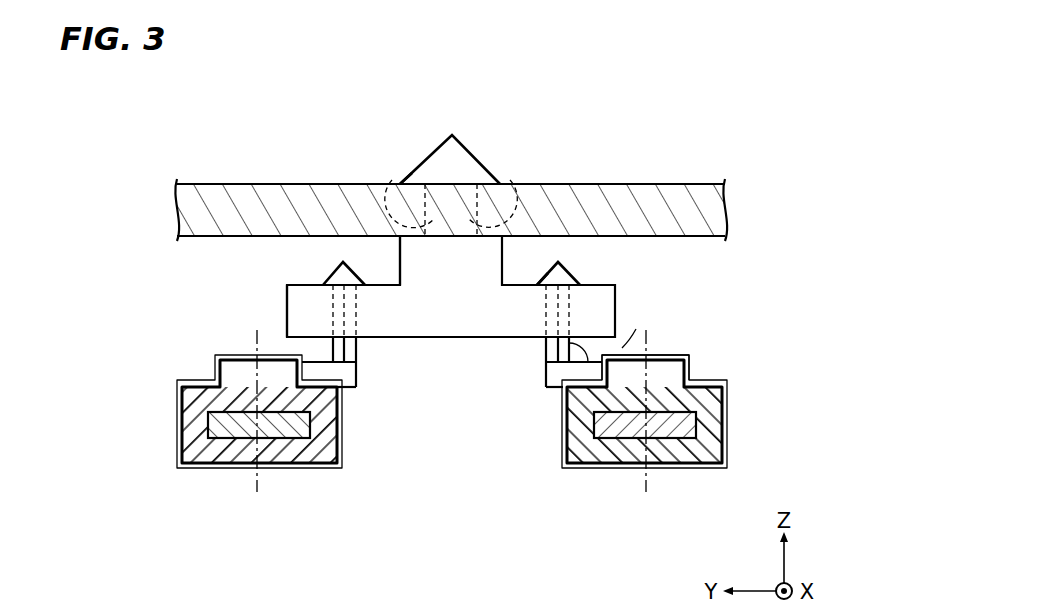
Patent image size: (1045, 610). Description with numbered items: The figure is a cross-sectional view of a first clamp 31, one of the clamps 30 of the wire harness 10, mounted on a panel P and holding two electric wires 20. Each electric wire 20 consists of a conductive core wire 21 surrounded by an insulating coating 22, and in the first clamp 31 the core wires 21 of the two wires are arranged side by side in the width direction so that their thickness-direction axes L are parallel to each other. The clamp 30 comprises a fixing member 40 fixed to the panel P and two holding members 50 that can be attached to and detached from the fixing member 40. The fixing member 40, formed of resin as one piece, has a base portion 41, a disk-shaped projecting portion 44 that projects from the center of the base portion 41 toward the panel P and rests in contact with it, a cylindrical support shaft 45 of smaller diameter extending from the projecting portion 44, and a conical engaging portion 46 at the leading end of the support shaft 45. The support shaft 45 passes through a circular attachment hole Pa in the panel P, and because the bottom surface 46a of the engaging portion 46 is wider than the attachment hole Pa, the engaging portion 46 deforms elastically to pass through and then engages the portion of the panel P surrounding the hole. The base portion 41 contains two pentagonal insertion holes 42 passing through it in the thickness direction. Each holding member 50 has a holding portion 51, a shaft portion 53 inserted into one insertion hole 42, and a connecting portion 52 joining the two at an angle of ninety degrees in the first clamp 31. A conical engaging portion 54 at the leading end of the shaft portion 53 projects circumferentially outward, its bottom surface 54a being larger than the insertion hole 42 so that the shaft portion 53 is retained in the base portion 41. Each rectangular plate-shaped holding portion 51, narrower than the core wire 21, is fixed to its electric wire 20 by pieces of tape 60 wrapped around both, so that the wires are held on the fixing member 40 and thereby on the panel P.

The connector assembly 10 is at (482, 266).
The electric wire 20 is at (445, 443).
The core wire 21 is at (616, 432).
The insulating coating 22 is at (677, 460).
The clamp 30 is at (510, 286).
The first clamp 31 is at (620, 282).
The fixing member 40 is at (460, 141).
The base portion 41 is at (287, 303).
The insertion hole 42 is at (348, 309).
The projecting portion 44 is at (407, 253).
The support shaft 45 is at (508, 188).
The engaging portion 46 is at (456, 150).
The bottom surface 46a is at (401, 183).
The holding member 50 is at (452, 385).
The holding portion 51 is at (688, 372).
The connecting portion 52 is at (553, 388).
The shaft portion 53 is at (547, 352).
The engaging portion 54 is at (563, 266).
The bottom surface 54a is at (537, 287).
The tape 60 is at (177, 430).
The panel P is at (697, 205).
The attachment hole Pa is at (392, 181).
The axis L is at (257, 340).